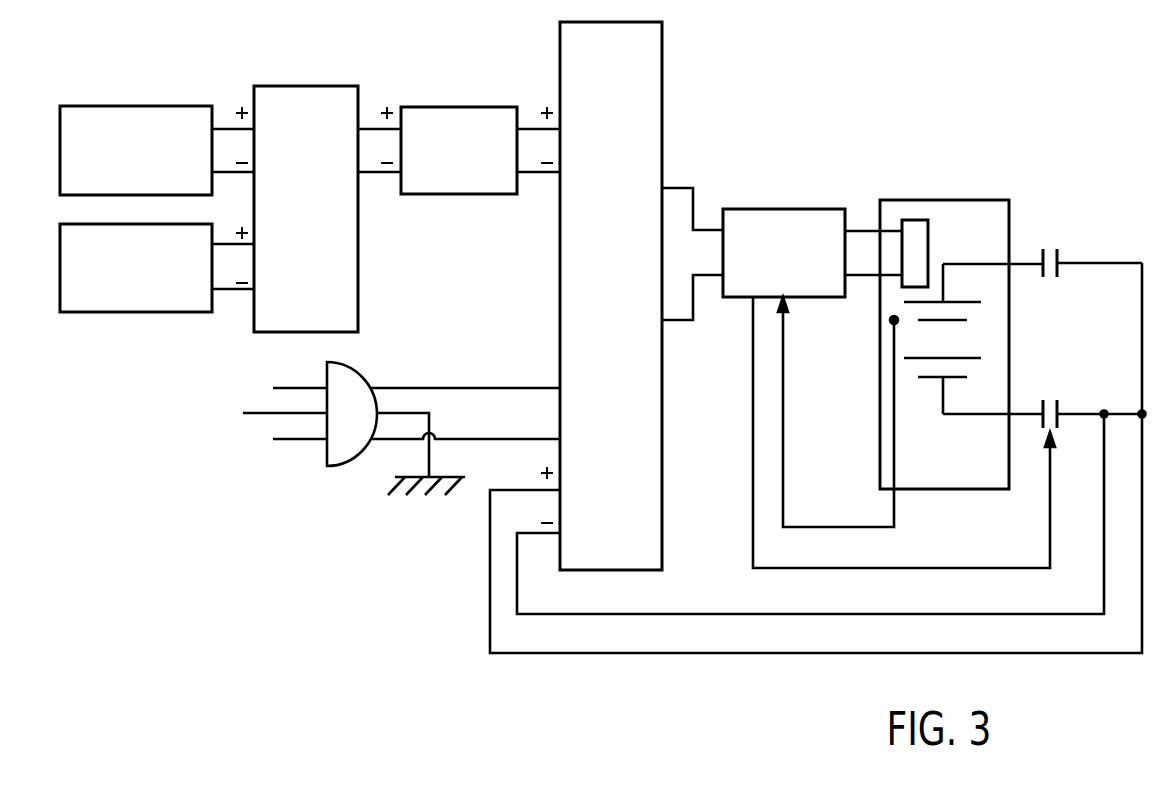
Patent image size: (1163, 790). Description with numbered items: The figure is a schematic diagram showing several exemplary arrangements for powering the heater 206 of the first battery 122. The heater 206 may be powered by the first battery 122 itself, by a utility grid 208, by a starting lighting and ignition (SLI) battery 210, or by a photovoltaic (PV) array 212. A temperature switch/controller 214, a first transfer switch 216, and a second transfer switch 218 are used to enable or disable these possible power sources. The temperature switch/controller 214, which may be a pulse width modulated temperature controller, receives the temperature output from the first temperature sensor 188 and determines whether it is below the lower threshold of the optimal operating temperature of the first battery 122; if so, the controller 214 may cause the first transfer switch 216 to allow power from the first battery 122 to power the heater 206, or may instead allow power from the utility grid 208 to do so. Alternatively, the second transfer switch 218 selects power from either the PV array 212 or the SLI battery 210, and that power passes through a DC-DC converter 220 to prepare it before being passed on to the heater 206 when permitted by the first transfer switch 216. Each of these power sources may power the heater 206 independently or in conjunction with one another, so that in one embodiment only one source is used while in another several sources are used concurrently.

The photovoltaic (PV) array 212 is at (117, 167).
The starting lighting and ignition (SLI) battery 210 is at (117, 284).
The second transfer switch 218 is at (286, 225).
The DC-DC converter 220 is at (439, 167).
The first transfer switch 216 is at (591, 312).
The temperature switch/controller 214 is at (764, 269).
The heater 206 is at (928, 237).
The first battery 122 is at (944, 489).
The first temperature sensor 188 is at (894, 320).
The utility grid 208 is at (308, 518).